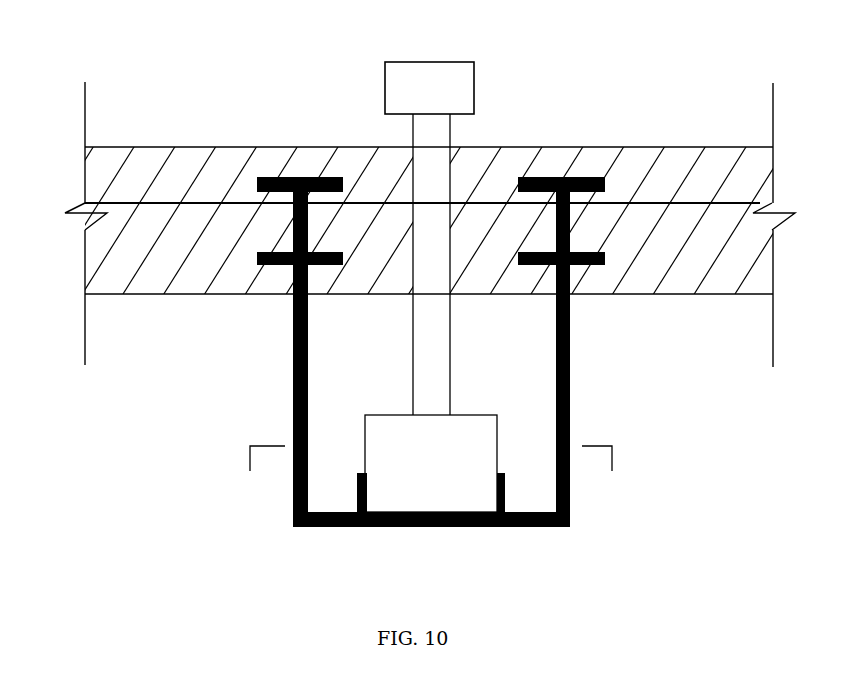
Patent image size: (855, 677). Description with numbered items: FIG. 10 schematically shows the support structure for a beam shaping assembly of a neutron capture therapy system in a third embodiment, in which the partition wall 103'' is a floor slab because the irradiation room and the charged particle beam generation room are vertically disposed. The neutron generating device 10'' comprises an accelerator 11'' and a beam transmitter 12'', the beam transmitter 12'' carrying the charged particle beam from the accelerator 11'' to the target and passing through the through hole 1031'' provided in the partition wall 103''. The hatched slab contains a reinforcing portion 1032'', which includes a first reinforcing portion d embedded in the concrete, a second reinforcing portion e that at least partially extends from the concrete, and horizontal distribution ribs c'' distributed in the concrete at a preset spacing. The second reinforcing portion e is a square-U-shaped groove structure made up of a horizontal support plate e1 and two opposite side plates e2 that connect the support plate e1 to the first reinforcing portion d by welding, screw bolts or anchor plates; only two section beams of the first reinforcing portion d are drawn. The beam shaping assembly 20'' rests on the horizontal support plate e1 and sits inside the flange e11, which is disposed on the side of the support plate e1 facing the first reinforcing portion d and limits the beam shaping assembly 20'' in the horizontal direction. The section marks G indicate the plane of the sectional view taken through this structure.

The partition wall 103'' is at (428, 200).
The through hole 1031'' is at (428, 238).
The reinforcing portion 1032'' is at (429, 273).
The distribution ribs c'' is at (393, 192).
The first reinforcing portion d is at (588, 177).
The second reinforcing portion e is at (420, 374).
The horizontal support plate e1 is at (469, 538).
The side plates e2 is at (571, 374).
The flange e11 is at (505, 478).
The neutron generating device 10'' is at (433, 287).
The accelerator 11'' is at (402, 90).
The beam transmitter 12'' is at (393, 264).
The beam shaping assembly 20'' is at (404, 463).
The section line G is at (430, 476).